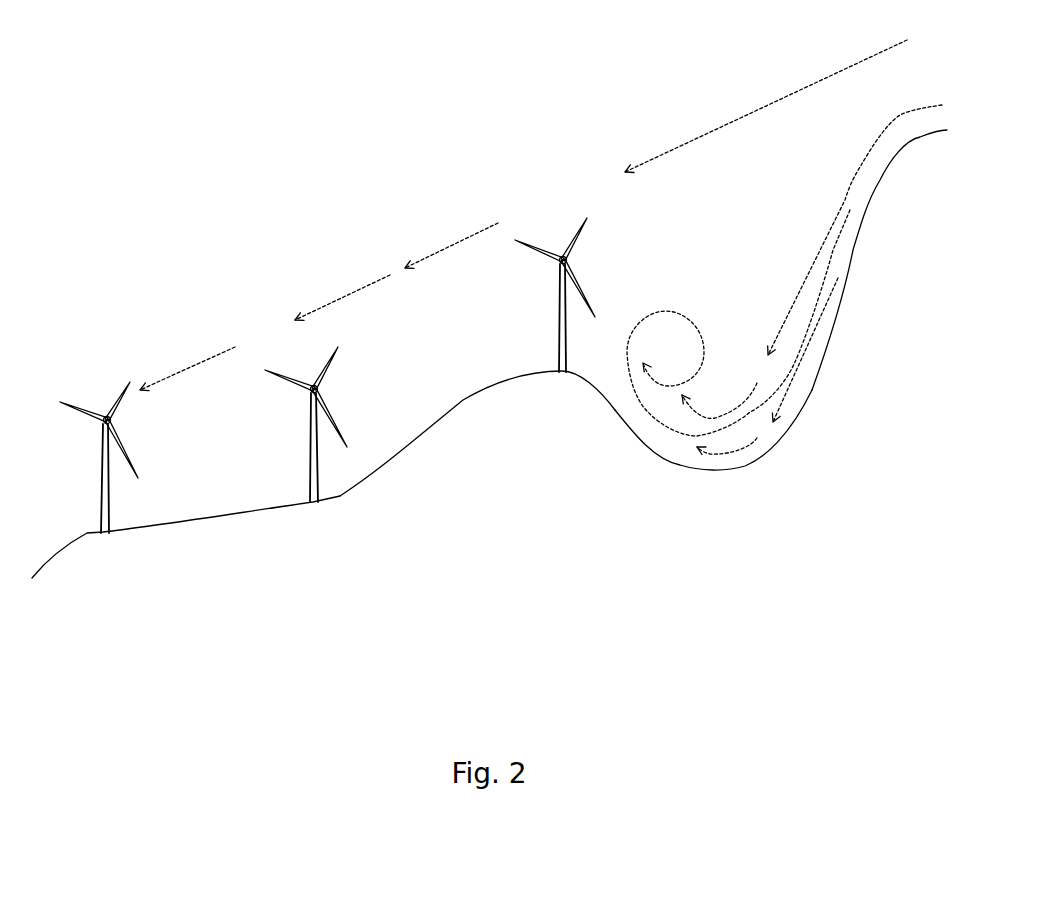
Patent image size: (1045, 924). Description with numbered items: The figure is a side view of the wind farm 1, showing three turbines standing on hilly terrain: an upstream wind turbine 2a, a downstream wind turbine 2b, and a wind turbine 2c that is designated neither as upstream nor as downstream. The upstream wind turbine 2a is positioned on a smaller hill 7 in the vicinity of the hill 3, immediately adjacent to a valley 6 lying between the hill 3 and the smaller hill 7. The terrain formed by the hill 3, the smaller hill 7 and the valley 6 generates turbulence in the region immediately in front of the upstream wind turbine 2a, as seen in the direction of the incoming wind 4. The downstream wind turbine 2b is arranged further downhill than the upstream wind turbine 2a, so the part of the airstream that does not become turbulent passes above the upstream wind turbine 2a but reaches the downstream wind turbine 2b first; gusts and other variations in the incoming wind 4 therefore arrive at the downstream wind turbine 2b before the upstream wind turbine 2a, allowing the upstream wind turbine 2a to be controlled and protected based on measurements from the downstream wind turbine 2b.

The wind farm 1 is at (173, 157).
The upstream wind turbine 2a is at (557, 322).
The downstream wind turbine 2b is at (105, 470).
The wind turbine 2c is at (312, 430).
The hill 3 is at (928, 143).
The incoming wind 4 is at (683, 145).
The valley 6 is at (726, 473).
The smaller hill 7 is at (565, 377).